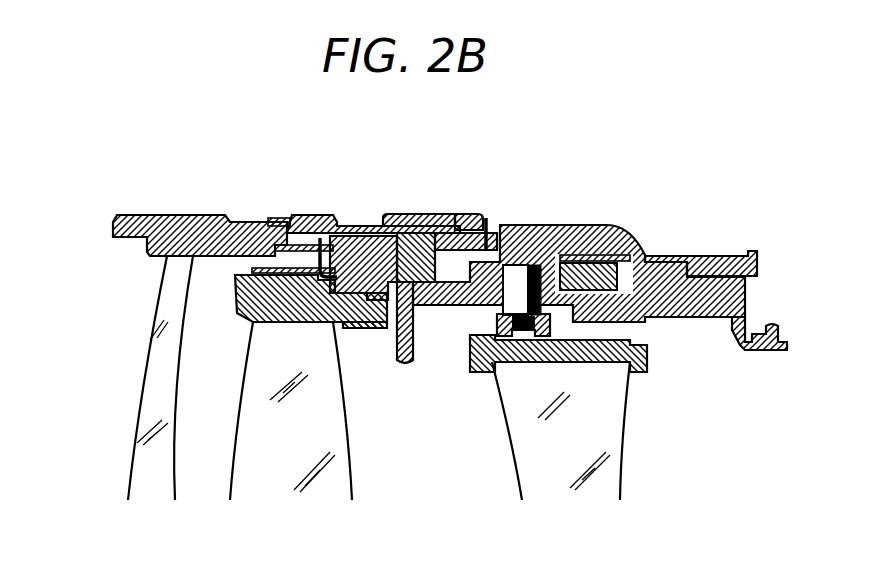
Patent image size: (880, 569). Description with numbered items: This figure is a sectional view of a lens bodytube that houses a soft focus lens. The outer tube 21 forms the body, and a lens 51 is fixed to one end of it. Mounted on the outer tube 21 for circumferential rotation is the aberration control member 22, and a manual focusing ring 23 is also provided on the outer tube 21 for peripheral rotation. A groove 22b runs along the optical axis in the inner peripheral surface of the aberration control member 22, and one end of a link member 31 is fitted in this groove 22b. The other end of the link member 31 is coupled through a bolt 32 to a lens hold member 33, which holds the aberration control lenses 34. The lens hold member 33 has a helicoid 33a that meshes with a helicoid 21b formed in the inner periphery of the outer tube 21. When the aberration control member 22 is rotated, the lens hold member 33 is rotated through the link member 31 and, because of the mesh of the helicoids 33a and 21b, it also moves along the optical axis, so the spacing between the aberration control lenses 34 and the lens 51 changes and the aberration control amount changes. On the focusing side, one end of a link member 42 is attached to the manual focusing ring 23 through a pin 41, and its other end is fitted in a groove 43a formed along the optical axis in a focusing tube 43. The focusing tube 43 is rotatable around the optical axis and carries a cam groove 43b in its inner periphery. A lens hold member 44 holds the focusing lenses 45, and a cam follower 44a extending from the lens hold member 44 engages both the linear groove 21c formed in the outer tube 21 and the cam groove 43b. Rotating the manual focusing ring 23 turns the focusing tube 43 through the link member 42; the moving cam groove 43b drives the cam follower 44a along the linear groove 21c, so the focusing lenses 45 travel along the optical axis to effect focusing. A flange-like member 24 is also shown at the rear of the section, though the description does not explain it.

The outer tube 21 is at (160, 213).
The helicoid 21b is at (375, 222).
The linear groove 21c is at (585, 225).
The aberration control member 22 is at (305, 215).
The groove 22b is at (271, 217).
The manual focusing ring 23 is at (432, 214).
The mount flange 24 is at (730, 252).
The link member 31 is at (345, 222).
The bolt 32 is at (262, 264).
The lens hold member 33 is at (245, 325).
The helicoid 33a is at (360, 330).
The aberration control lenses 34 is at (348, 470).
The pin 41 is at (494, 222).
The link member 42 is at (470, 214).
The focusing tube 43 is at (628, 234).
The groove 43a is at (447, 310).
The cam groove 43b is at (535, 222).
The lens hold member 44 is at (655, 360).
The cam follower 44a is at (494, 340).
The focusing lenses 45 is at (625, 425).
The lens 51 is at (128, 412).